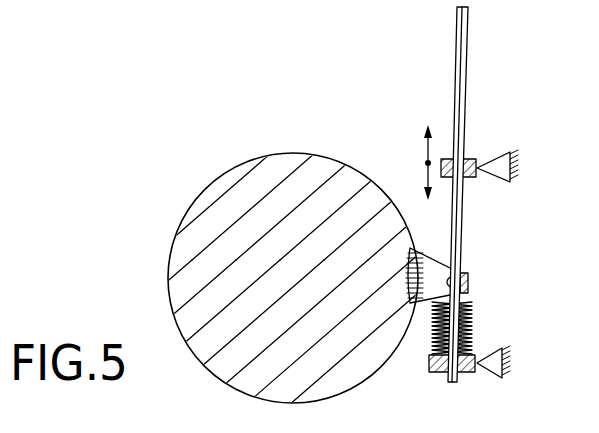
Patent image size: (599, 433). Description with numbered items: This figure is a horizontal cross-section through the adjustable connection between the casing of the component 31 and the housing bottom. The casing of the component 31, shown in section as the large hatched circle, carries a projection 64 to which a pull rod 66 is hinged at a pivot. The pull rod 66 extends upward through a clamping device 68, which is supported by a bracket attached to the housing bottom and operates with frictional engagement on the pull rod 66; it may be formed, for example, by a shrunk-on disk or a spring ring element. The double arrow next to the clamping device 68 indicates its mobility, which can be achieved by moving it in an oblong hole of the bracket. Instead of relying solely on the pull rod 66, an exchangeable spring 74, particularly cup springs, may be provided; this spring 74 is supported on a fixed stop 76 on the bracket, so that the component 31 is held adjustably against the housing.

The component 31 is at (268, 163).
The projection 64 is at (427, 262).
The pull rod 66 is at (467, 60).
The clamping device 68 is at (466, 158).
The exchangeable spring 74 is at (474, 306).
The fixed stop 76 is at (466, 373).